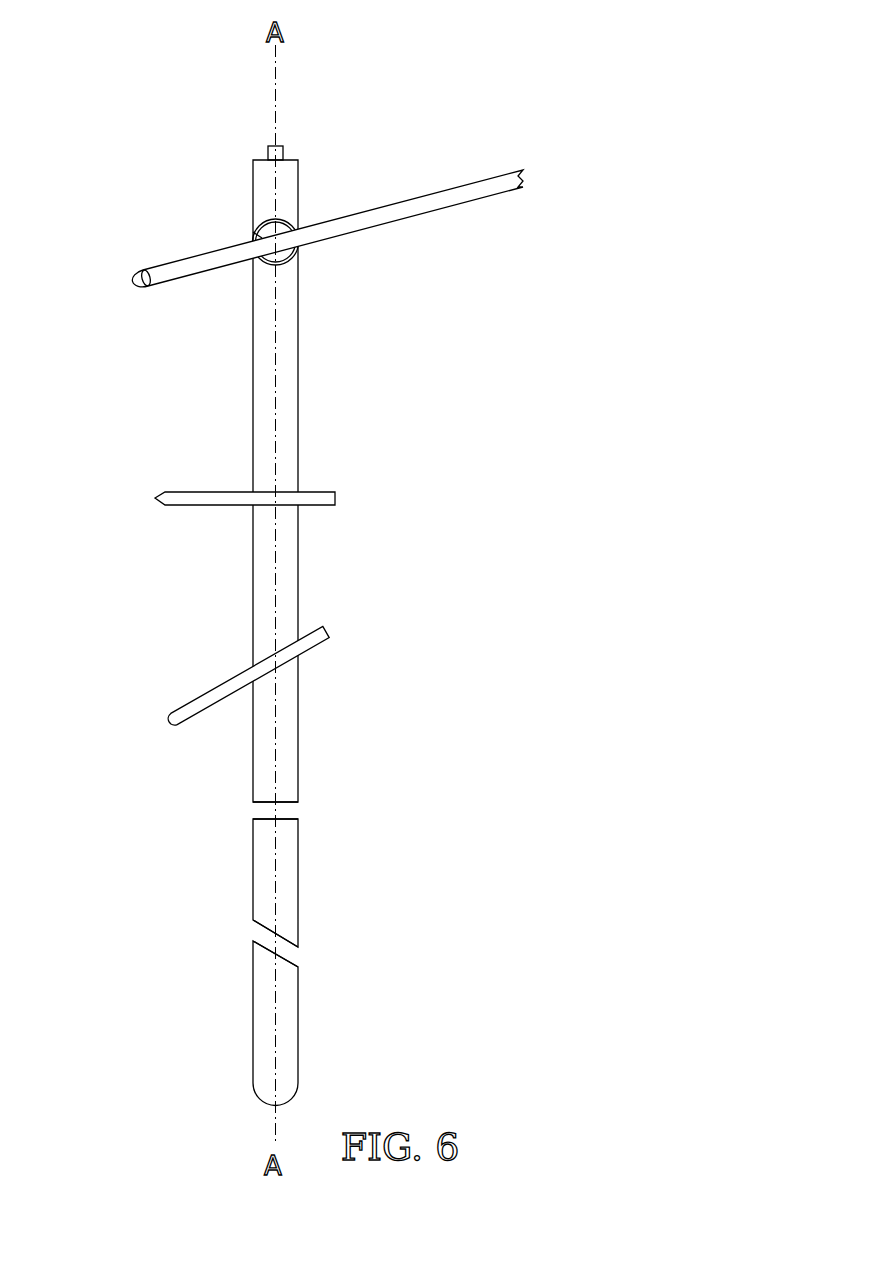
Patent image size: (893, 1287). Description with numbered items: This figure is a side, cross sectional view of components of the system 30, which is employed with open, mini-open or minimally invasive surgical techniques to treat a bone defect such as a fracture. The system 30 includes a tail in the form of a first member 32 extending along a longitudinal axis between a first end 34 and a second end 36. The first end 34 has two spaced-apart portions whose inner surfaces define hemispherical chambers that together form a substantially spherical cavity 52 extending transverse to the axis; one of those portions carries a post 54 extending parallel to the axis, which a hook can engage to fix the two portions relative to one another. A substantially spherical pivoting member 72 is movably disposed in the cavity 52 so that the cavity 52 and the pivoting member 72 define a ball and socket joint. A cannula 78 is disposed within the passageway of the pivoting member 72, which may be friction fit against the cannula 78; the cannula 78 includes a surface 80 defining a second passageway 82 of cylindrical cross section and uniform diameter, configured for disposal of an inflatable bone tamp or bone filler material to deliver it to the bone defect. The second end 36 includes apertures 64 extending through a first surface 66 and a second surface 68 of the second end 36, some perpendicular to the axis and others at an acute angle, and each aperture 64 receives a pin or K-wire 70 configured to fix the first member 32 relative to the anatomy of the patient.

The system 30 is at (289, 569).
The first member 32 is at (277, 569).
The first end 34 is at (283, 417).
The second end 36 is at (300, 1086).
The spherical cavity 52 is at (239, 232).
The post 54 is at (284, 148).
The aperture 64 is at (320, 510).
The first surface 66 is at (300, 884).
The second surface 68 is at (300, 749).
The pin or K-wire 70 is at (185, 466).
The pivoting member 72 is at (292, 224).
The cannula 78 is at (289, 217).
The surface 80 is at (142, 284).
The second passageway 82 is at (121, 275).